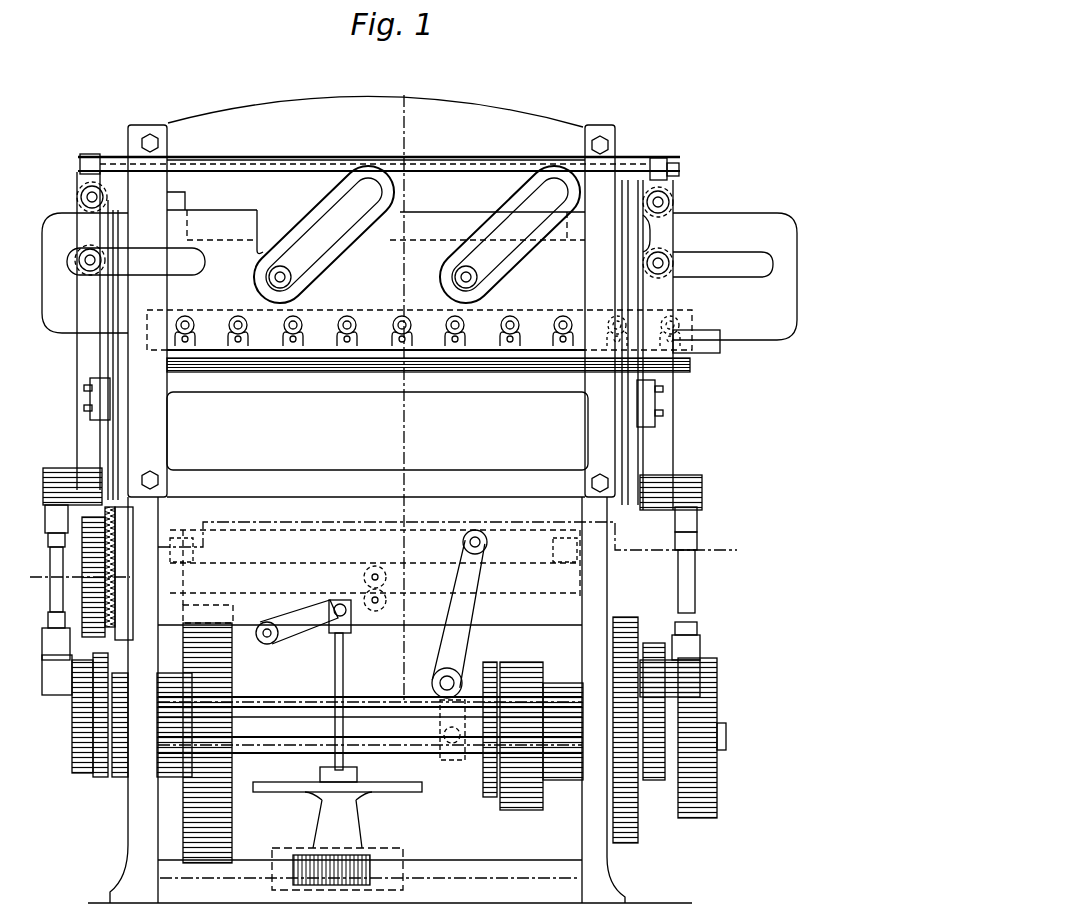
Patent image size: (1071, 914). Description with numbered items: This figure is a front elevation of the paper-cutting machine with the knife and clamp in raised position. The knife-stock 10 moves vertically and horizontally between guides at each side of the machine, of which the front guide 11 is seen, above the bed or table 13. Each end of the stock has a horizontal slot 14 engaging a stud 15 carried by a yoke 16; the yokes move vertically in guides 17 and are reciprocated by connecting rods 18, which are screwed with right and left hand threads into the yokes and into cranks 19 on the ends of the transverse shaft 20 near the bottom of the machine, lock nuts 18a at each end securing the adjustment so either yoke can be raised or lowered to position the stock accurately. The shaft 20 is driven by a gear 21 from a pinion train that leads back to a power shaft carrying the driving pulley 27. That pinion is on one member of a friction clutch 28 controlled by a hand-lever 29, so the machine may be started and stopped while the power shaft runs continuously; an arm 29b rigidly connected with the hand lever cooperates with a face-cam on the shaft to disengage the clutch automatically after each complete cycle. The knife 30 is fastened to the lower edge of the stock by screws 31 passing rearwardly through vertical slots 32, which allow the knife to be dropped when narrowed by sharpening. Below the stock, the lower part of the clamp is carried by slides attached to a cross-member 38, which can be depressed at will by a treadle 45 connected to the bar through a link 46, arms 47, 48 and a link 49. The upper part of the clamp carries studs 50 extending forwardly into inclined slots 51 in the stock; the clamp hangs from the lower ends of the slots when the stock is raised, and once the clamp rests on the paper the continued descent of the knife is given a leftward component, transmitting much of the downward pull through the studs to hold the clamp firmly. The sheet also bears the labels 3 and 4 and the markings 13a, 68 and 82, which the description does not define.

The section line 3 is at (390, 560).
The section line 4 is at (413, 84).
The knife-stock 10 is at (376, 296).
The front guide 11 is at (373, 311).
The bed or table 13 is at (355, 477).
The rail 13a is at (227, 168).
The horizontal slot 14 is at (199, 265).
The stud 15 is at (86, 257).
The yoke 16 is at (80, 419).
The guide 17 is at (94, 395).
The connecting rod 18 is at (50, 605).
The lock nut 18a is at (48, 545).
The crank 19 is at (72, 730).
The transverse shaft 20 is at (283, 703).
The gear 21 is at (622, 618).
The driving pulley 27 is at (230, 828).
The friction clutch 28 is at (532, 667).
The hand-lever 29 is at (480, 580).
The arm 29b is at (440, 700).
The knife 30 is at (297, 372).
The screw 31 is at (398, 315).
The vertical slot 32 is at (185, 335).
The cross-member 38 is at (368, 543).
The treadle 45 is at (410, 785).
The link 46 is at (336, 693).
The arm 47 is at (303, 634).
The arm 48 is at (406, 641).
The link 49 is at (392, 592).
The stud 50 is at (390, 263).
The inclined slot 51 is at (338, 213).
The gear 68 is at (100, 780).
The gear 82 is at (118, 790).